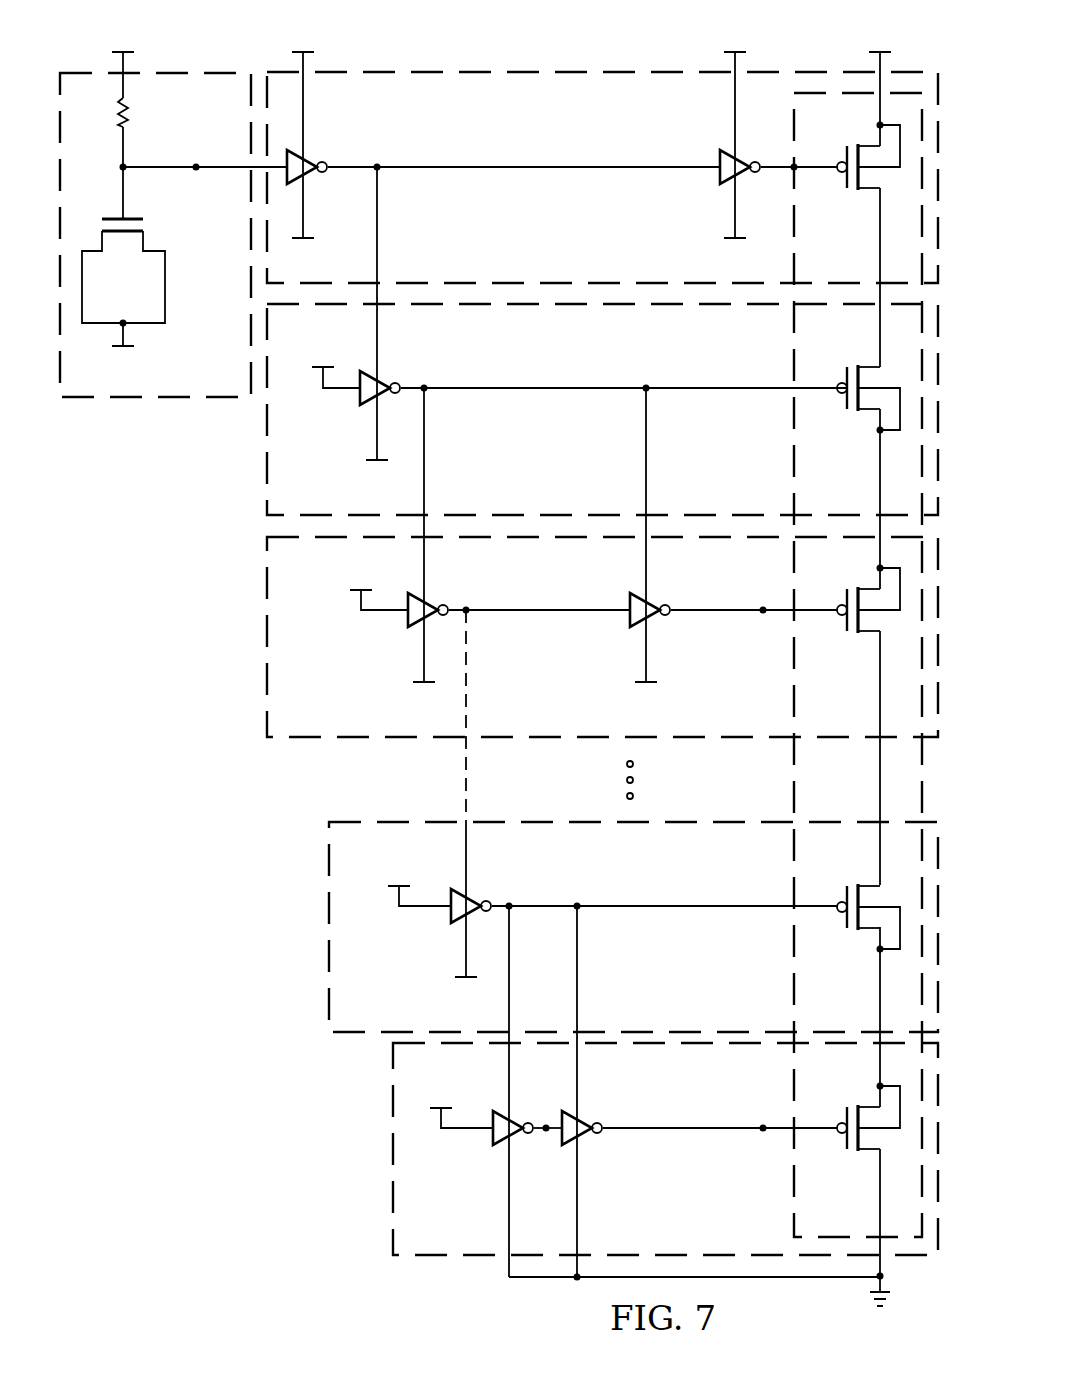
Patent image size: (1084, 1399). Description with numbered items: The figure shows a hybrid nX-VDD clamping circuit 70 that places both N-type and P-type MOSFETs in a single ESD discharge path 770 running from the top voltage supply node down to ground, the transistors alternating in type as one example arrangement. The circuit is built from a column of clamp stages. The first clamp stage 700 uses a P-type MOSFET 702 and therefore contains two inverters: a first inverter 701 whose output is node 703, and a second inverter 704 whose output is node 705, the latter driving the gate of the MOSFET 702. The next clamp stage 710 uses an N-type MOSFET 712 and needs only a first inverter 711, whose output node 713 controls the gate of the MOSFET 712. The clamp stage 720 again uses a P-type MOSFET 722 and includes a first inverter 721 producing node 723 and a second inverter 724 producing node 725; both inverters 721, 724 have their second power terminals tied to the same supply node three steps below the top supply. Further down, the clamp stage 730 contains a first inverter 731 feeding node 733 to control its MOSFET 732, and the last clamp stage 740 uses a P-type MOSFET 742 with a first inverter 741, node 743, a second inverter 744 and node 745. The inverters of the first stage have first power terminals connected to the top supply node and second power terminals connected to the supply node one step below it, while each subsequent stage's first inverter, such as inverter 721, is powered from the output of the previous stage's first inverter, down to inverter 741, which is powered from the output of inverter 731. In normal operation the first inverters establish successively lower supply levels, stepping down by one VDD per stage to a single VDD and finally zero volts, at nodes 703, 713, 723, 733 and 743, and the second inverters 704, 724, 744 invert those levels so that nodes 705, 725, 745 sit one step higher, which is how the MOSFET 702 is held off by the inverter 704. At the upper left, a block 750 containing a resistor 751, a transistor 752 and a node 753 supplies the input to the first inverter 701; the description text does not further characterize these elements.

The hybrid nX-VDD clamping circuit 70 is at (194, 1107).
The clamp stage 700 is at (630, 70).
The first inverter 701 is at (318, 173).
The P-type MOSFET 702 is at (842, 180).
The node 703 is at (375, 164).
The second inverter 704 is at (720, 160).
The node 705 is at (792, 164).
The clamp stage 710 is at (262, 463).
The first inverter 711 is at (362, 390).
The N-type MOSFET 712 is at (843, 410).
The node 713 is at (424, 384).
The clamp stage 720 is at (262, 664).
The first inverter 721 is at (410, 616).
The P-type MOSFET 722 is at (843, 632).
The node 723 is at (467, 606).
The second inverter 724 is at (663, 604).
The node 725 is at (762, 606).
The clamp stage 730 is at (326, 980).
The first inverter 731 is at (453, 912).
The N-type MOSFET 732 is at (843, 929).
The node 733 is at (510, 903).
The clamp stage 740 is at (390, 1201).
The first inverter 741 is at (494, 1134).
The P-type MOSFET 742 is at (843, 1152).
The node 743 is at (546, 1124).
The second inverter 744 is at (599, 1122).
The node 745 is at (762, 1124).
The bias circuit 750 is at (128, 403).
The resistor 751 is at (130, 107).
The transistor 752 is at (132, 217).
The node 753 is at (198, 164).
The ESD discharge path 770 is at (820, 90).